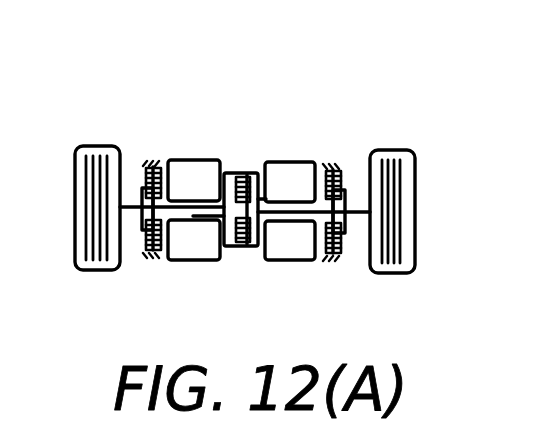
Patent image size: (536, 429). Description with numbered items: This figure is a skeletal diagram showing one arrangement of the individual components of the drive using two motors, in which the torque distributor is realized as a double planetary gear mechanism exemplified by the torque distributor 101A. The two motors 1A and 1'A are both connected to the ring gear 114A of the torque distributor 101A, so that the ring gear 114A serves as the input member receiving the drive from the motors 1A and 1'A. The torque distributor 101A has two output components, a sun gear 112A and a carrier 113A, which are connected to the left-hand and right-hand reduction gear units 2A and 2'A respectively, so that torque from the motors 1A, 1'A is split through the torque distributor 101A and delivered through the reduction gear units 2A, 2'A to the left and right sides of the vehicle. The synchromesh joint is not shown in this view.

The motor 1A is at (193, 160).
The motor 1'A is at (291, 154).
The left-hand reduction gear unit 2A is at (137, 185).
The right-hand reduction gear unit 2'A is at (353, 181).
The torque distributor 101A is at (245, 168).
The sun gear 112A is at (230, 216).
The carrier 113A is at (253, 245).
The ring gear 114A is at (237, 247).